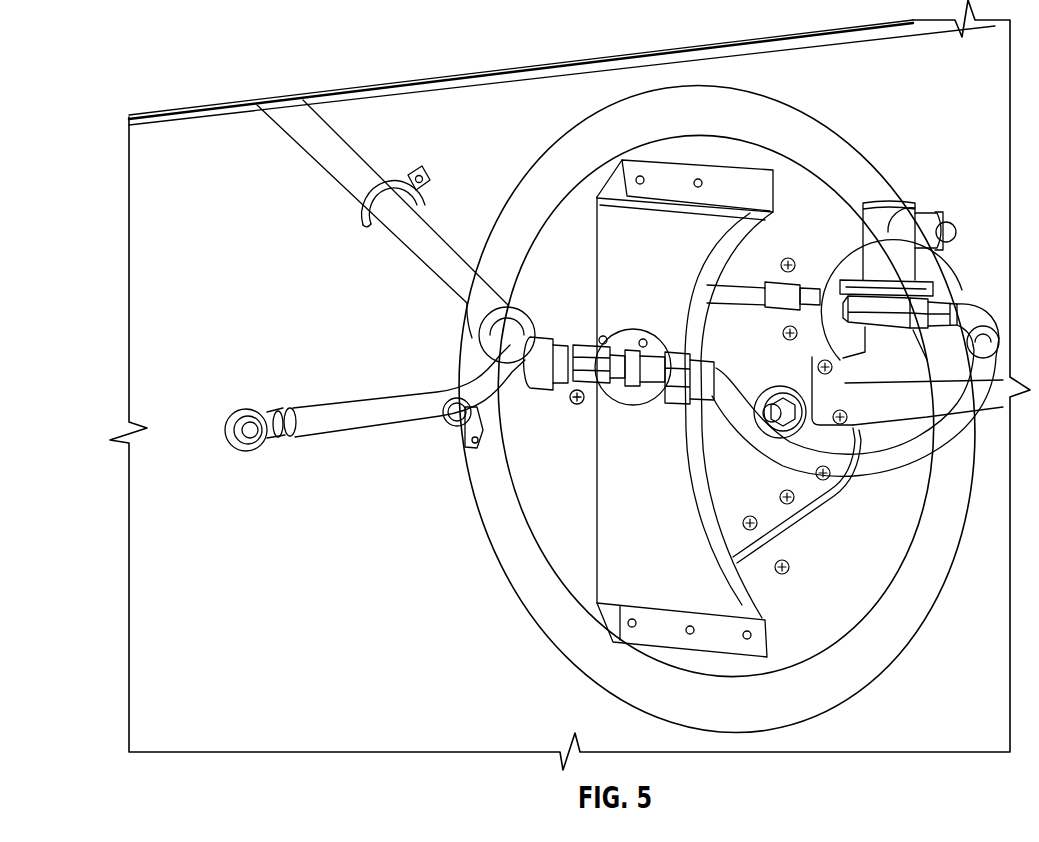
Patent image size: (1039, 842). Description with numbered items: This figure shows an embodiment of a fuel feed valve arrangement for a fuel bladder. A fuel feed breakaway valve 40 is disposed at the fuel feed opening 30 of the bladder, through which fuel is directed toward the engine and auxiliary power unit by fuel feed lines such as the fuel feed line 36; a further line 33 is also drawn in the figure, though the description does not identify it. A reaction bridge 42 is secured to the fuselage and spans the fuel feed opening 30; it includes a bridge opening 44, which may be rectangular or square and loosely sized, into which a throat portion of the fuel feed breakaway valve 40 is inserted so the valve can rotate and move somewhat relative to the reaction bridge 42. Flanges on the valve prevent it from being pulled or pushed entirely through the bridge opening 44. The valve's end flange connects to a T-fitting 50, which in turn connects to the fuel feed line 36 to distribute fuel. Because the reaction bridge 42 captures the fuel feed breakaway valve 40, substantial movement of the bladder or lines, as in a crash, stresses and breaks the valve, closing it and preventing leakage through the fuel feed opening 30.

The fuel feed opening 30 is at (797, 525).
The fuel line 33 is at (330, 413).
The fuel feed line 36 is at (345, 177).
The fuel feed breakaway valve 40 is at (743, 350).
The reaction bridge 42 is at (617, 467).
The bridge opening 44 is at (650, 328).
The T-fitting 50 is at (573, 400).